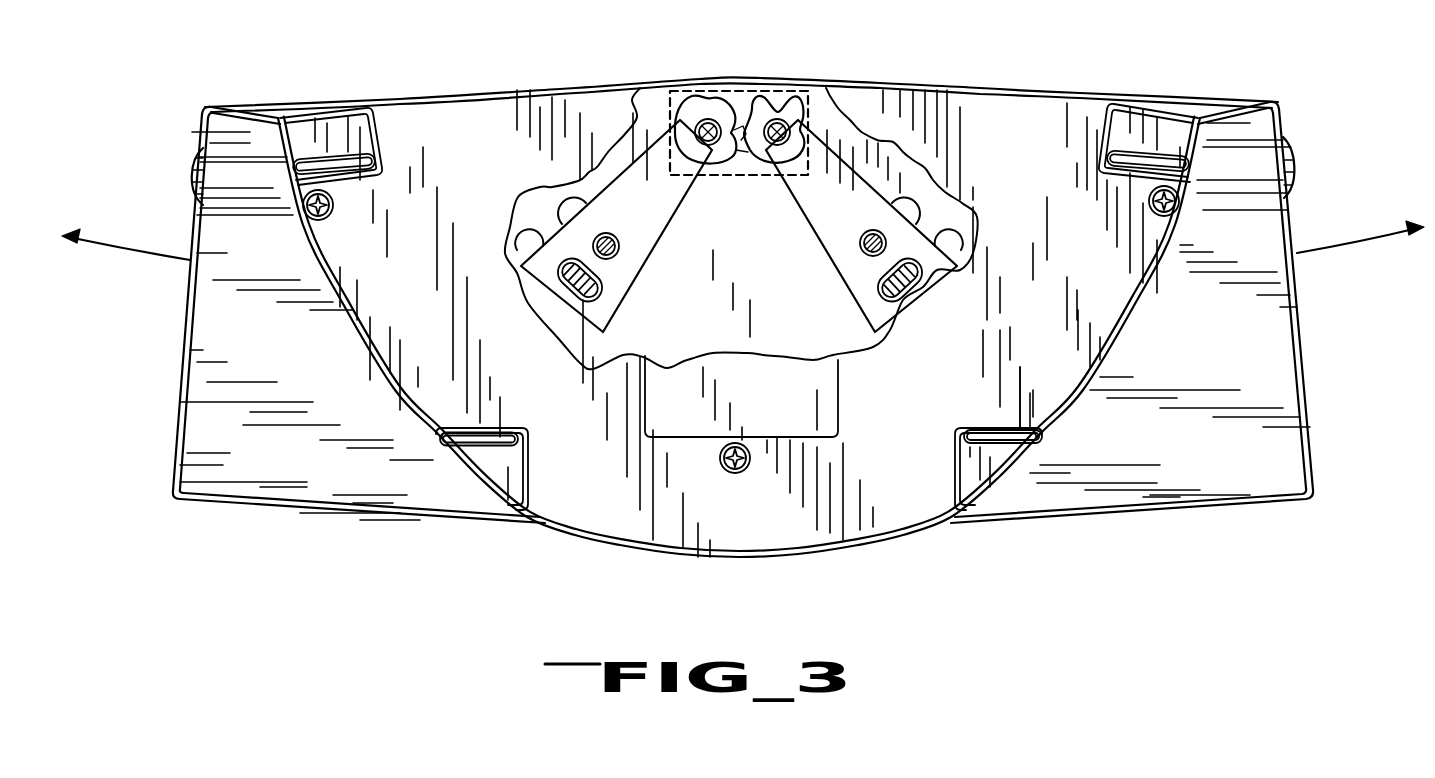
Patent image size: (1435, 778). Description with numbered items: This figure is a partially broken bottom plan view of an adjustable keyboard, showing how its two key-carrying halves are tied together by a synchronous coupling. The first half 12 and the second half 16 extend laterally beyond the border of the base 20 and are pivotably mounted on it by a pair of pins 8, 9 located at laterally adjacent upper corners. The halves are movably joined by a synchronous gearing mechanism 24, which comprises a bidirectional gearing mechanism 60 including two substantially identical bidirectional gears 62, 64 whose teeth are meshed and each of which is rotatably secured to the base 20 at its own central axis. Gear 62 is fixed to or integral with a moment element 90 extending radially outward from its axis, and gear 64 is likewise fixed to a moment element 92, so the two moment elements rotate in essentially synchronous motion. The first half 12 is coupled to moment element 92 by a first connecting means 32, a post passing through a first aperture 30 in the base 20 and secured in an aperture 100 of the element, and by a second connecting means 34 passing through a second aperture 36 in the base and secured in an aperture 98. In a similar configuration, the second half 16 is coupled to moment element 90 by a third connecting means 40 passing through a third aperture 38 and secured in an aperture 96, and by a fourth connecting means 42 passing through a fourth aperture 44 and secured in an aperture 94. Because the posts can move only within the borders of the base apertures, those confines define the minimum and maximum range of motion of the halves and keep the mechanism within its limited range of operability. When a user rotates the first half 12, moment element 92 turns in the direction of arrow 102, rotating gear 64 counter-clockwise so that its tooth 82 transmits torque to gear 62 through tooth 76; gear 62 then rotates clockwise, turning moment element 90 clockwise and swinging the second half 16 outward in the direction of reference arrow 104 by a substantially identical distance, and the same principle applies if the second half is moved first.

The pin 8 is at (706, 120).
The pin 9 is at (788, 108).
The first half 12 is at (1188, 460).
The second half 16 is at (340, 473).
The base 20 is at (467, 124).
The synchronous gearing mechanism 24 is at (751, 228).
The first aperture 30 is at (901, 267).
The first connecting means 32 is at (892, 333).
The second connecting means 34 is at (847, 220).
The second aperture 36 is at (940, 177).
The third aperture 38 is at (589, 242).
The third connecting means 40 is at (537, 294).
The fourth connecting means 42 is at (645, 231).
The fourth aperture 44 is at (596, 172).
The bidirectional gearing mechanism 60 is at (762, 120).
The bidirectional gear 62 is at (703, 120).
The bidirectional gear 64 is at (796, 136).
The tooth 76 is at (726, 162).
The tooth 82 is at (742, 124).
The moment element 90 is at (624, 278).
The moment element 92 is at (853, 268).
The aperture 94 is at (620, 250).
The aperture 96 is at (538, 297).
The aperture 98 is at (871, 235).
The aperture 100 is at (886, 334).
The arrow 102 is at (1343, 242).
The reference arrow 104 is at (118, 247).